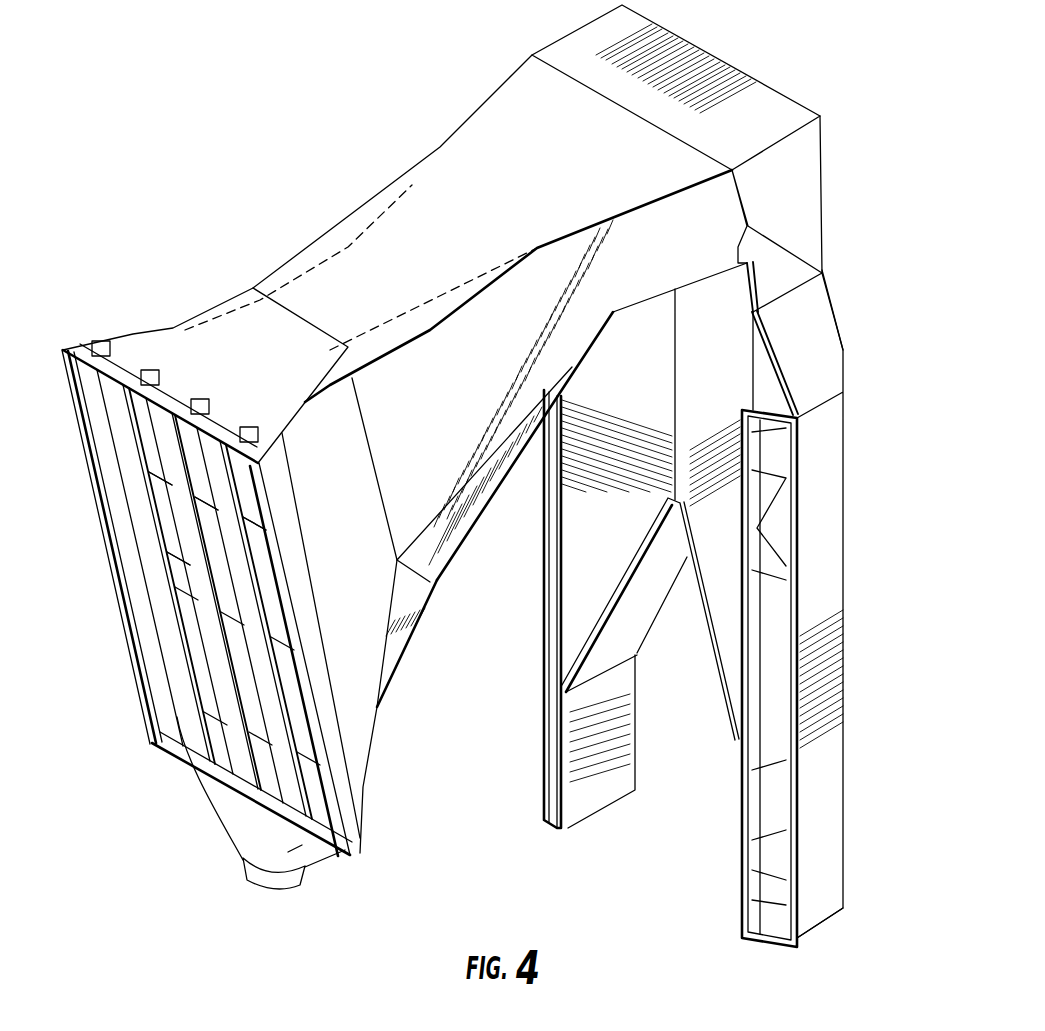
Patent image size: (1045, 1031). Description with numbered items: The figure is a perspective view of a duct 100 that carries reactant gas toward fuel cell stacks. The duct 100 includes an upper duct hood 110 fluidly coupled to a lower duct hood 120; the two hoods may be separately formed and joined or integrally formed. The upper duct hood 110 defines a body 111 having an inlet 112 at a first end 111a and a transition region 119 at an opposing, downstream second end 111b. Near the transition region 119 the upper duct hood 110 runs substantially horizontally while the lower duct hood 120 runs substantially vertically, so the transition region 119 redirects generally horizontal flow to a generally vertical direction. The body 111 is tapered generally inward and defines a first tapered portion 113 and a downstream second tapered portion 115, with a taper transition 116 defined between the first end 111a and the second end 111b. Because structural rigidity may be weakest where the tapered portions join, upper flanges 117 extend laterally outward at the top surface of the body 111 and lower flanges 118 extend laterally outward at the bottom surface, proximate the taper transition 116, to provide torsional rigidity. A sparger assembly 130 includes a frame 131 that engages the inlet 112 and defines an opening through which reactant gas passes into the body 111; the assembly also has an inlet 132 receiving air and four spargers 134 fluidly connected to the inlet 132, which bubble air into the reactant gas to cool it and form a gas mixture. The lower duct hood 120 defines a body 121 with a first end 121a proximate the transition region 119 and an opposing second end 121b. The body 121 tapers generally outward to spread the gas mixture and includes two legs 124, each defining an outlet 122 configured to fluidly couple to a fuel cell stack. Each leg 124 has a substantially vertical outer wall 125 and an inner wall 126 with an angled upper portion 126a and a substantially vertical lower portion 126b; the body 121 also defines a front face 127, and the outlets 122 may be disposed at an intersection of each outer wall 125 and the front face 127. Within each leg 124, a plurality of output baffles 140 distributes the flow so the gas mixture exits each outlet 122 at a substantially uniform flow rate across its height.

The duct 100 is at (118, 80).
The upper duct hood 110 is at (447, 203).
The body 111 is at (408, 187).
The first end 111a is at (133, 330).
The second end 111b is at (625, 313).
The inlet 112 is at (178, 586).
The first tapered portion 113 is at (228, 348).
The second tapered portion 115 is at (452, 444).
The taper transition 116 is at (377, 487).
The upper flanges 117 is at (300, 280).
The lower flanges 118 is at (440, 545).
The transition region 119 is at (772, 108).
The lower duct hood 120 is at (830, 530).
The body 121 is at (826, 463).
The first end 121a is at (832, 178).
The second end 121b is at (852, 912).
The outlet 122 is at (548, 718).
The legs 124 is at (619, 802).
The outer wall 125 is at (816, 660).
The inner wall 126 is at (600, 665).
The upper portion 126a is at (648, 612).
The lower portion 126b is at (598, 717).
The front face 127 is at (718, 377).
The sparger assembly 130 is at (170, 750).
The frame 131 is at (355, 783).
The inlet 132 is at (283, 890).
The spargers 134 is at (280, 582).
The output baffles 140 is at (775, 440).